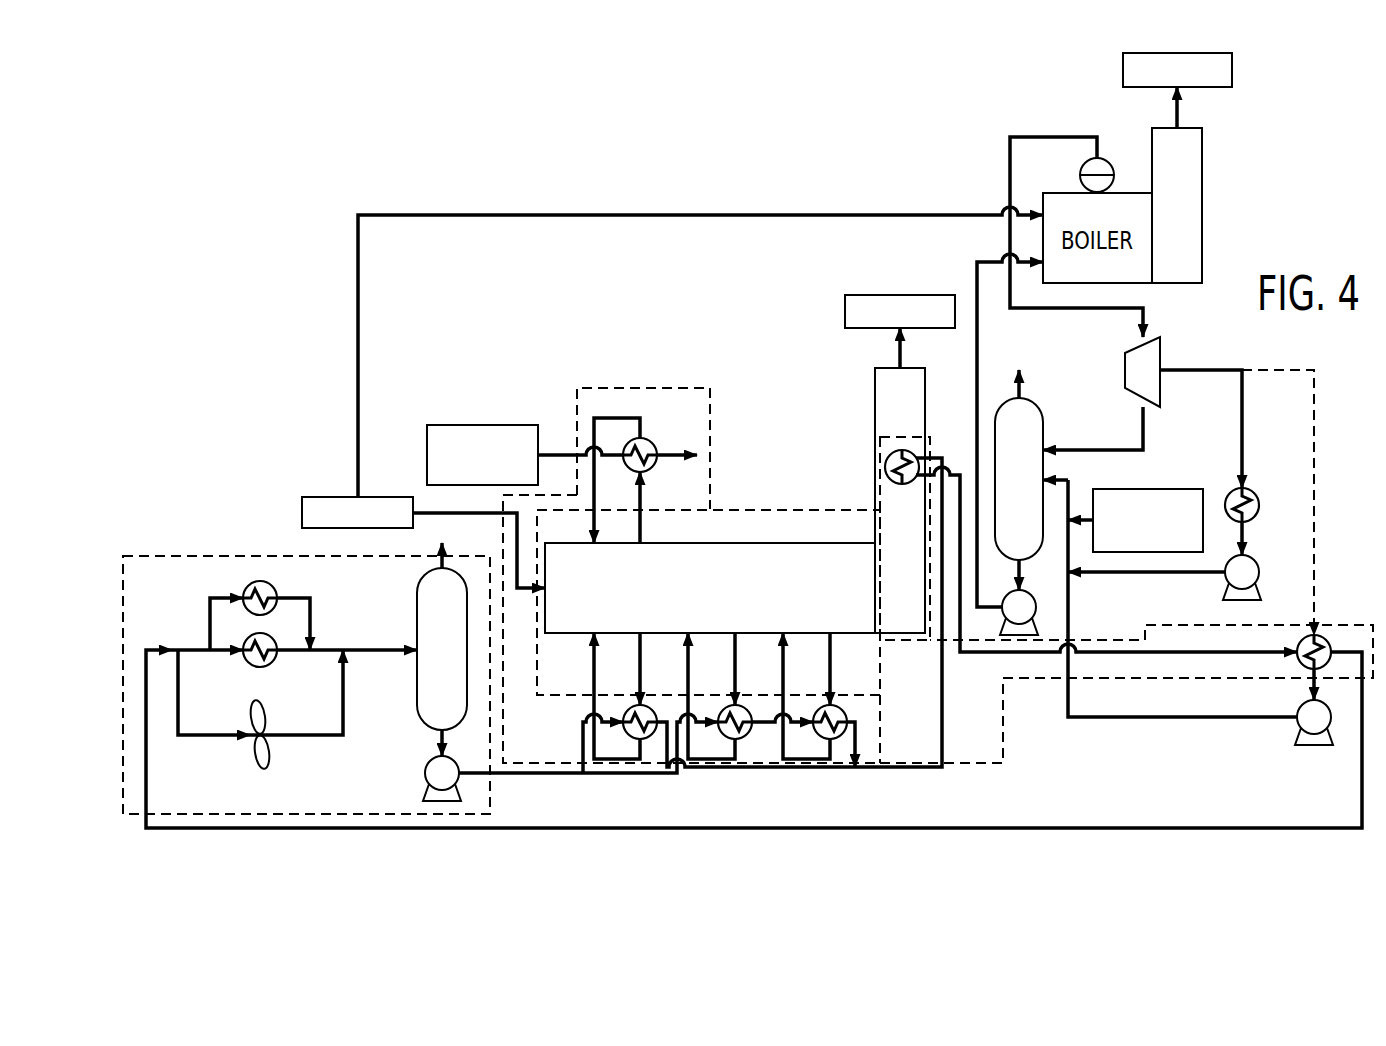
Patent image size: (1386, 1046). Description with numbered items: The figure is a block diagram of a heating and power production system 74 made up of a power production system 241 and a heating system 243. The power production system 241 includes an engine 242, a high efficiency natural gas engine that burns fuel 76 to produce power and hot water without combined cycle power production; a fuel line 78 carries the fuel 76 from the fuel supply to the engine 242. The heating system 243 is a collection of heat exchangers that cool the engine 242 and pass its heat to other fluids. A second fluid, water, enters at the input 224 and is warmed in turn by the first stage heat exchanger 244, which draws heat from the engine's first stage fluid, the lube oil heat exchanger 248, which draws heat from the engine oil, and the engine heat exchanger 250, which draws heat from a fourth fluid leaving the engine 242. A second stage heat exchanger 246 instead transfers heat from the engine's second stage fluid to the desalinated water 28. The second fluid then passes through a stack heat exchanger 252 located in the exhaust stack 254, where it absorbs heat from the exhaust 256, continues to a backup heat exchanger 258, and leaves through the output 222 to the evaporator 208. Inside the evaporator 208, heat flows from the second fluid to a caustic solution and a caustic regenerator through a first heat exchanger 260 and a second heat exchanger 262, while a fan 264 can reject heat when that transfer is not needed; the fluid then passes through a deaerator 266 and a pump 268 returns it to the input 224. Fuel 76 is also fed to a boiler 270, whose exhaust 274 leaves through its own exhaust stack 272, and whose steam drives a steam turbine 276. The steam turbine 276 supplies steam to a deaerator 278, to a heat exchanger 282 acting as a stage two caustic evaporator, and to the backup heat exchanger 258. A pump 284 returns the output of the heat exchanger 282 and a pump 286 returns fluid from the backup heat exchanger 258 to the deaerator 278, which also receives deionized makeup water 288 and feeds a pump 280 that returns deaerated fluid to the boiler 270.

The heating and power production system 74 is at (185, 145).
The desalinated water 28 is at (483, 425).
The fuel 76 is at (302, 508).
The fuel line to engine 78 is at (513, 545).
The evaporator 208 is at (178, 556).
The output 222 is at (368, 829).
The input 224 is at (577, 767).
The power production system 241 is at (722, 368).
The engine 242 is at (762, 543).
The heating system 243 is at (1005, 728).
The first stage heat exchanger 244 is at (652, 708).
The second stage heat exchanger 246 is at (652, 442).
The lube oil heat exchanger 248 is at (747, 708).
The engine heat exchanger 250 is at (845, 708).
The stack heat exchanger 252 is at (888, 478).
The exhaust stack 254 is at (880, 437).
The exhaust 256 is at (900, 295).
The backup heat exchanger 258 is at (1328, 638).
The first heat exchanger 260 is at (277, 662).
The second heat exchanger 262 is at (280, 585).
The fan 264 is at (248, 757).
The deaerator 266 is at (417, 680).
The pump 268 is at (426, 760).
The boiler 270 is at (1125, 193).
The exhaust stack 272 is at (1202, 205).
The exhaust 274 is at (1233, 68).
The steam turbine 276 is at (1165, 350).
The deaerator 278 is at (1043, 418).
The pump 280 is at (1037, 607).
The heat exchanger 282 is at (1256, 495).
The pump 284 is at (1225, 580).
The pump 286 is at (1300, 706).
The deionized makeup water 288 is at (1150, 489).